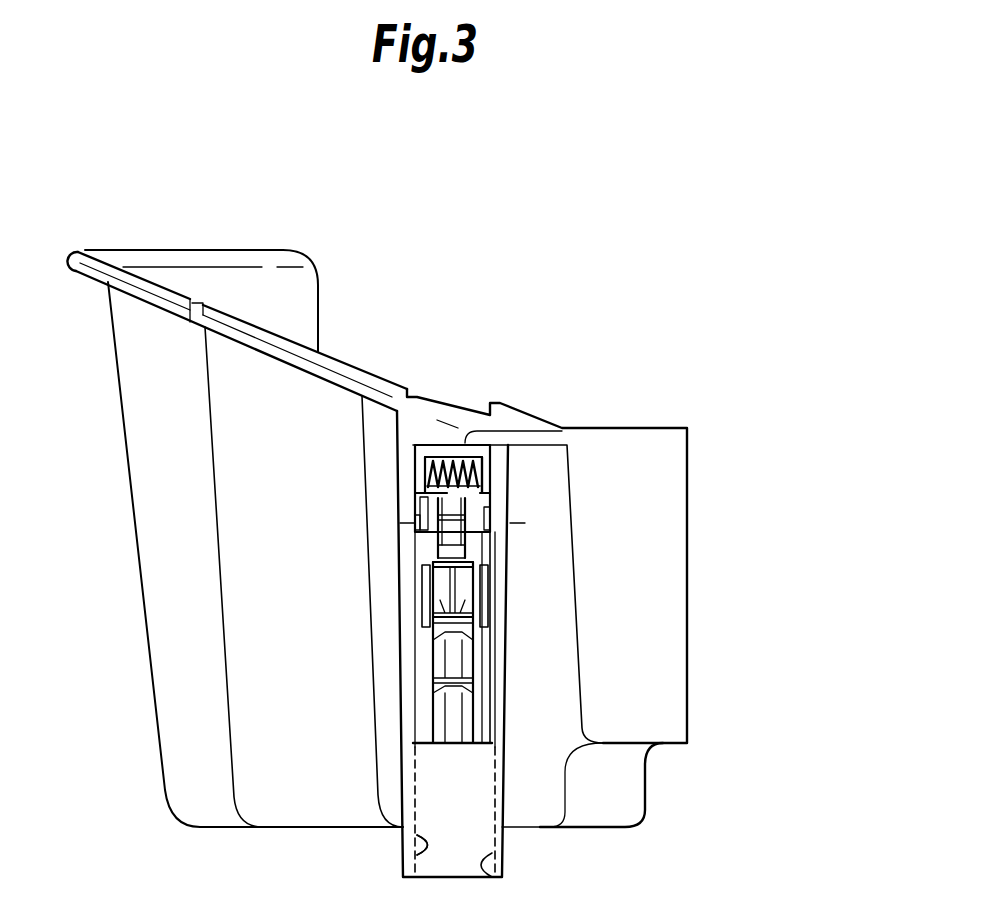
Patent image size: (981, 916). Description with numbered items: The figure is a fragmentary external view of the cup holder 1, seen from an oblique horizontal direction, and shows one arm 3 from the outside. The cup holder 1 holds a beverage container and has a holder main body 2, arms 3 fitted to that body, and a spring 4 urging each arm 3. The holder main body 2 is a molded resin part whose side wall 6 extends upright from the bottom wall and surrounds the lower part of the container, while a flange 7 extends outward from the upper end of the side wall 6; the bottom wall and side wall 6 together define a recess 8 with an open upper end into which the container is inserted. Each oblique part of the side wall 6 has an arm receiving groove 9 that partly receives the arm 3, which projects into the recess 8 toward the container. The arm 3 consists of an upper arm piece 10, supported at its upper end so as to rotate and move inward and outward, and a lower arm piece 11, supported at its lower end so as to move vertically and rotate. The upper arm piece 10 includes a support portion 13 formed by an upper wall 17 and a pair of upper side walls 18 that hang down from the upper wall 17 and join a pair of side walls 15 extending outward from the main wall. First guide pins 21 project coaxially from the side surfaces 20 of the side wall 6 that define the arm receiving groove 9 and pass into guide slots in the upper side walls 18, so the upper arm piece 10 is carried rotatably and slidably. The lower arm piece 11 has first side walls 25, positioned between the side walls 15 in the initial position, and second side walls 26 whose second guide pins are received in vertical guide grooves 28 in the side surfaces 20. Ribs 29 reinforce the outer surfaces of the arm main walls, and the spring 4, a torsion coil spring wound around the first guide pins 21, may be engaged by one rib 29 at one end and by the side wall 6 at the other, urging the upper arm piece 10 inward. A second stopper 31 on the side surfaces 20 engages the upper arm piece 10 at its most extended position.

The cup holder 1 is at (621, 211).
The holder main body 2 is at (206, 237).
The arm 3 is at (430, 438).
The spring 4 is at (446, 458).
The side wall 6 is at (124, 538).
The flange 7 is at (108, 257).
The recess 8 is at (278, 300).
The arm receiving groove 9 is at (427, 855).
The upper arm piece 10 is at (507, 555).
The lower arm piece 11 is at (507, 722).
The support portion 13 is at (531, 296).
The side wall 15 is at (487, 590).
The upper wall 17 is at (473, 450).
The upper side wall 18 is at (490, 467).
The side surface 20 is at (353, 859).
The first guide pin 21 is at (487, 467).
The first side wall 25 is at (480, 608).
The second side wall 26 is at (480, 668).
The guide groove 28 is at (478, 870).
The rib 29 is at (417, 513).
The second stopper 31 is at (408, 527).